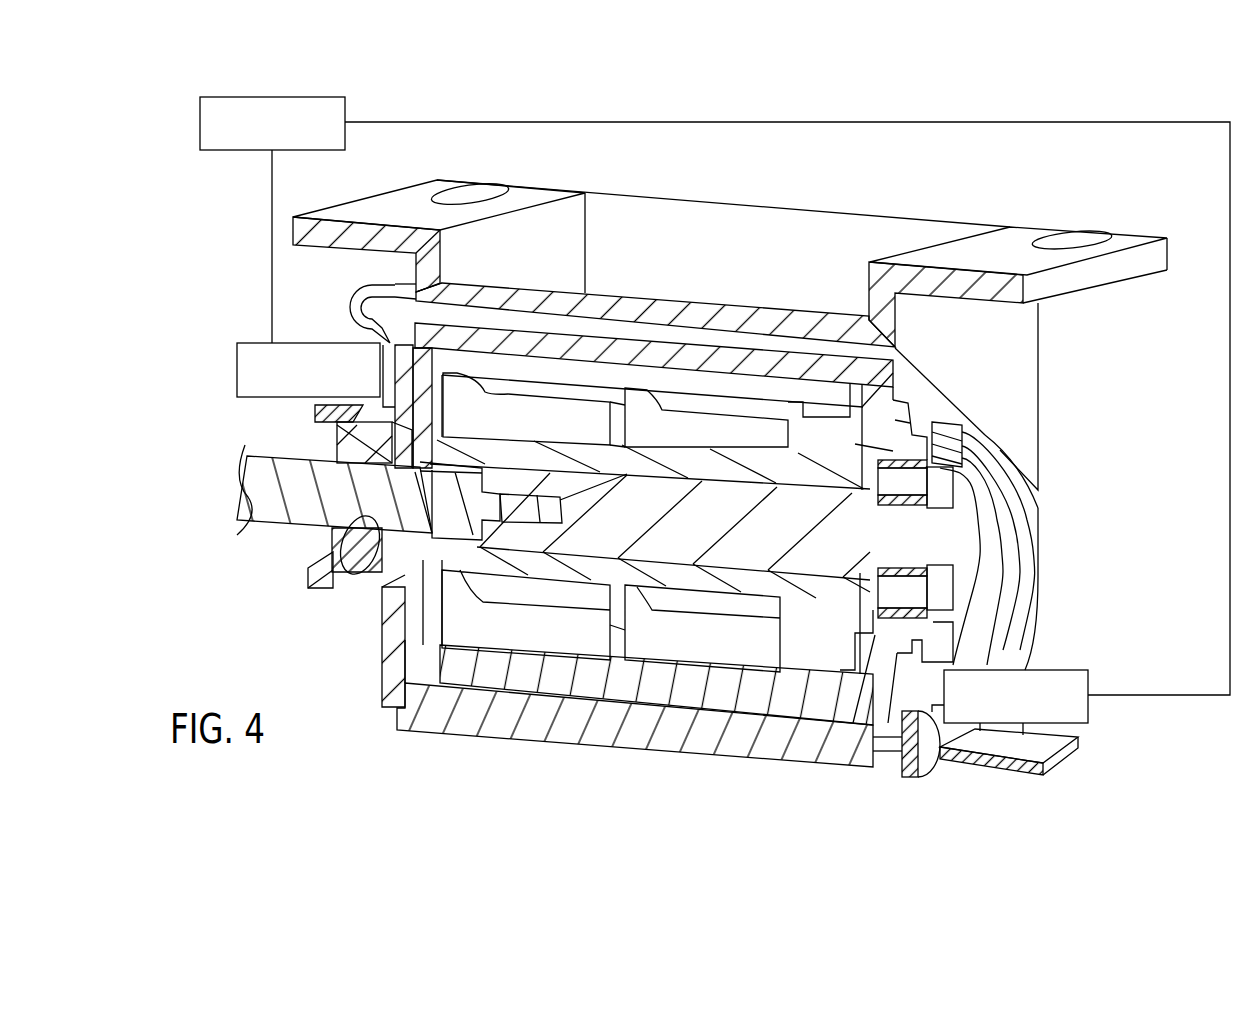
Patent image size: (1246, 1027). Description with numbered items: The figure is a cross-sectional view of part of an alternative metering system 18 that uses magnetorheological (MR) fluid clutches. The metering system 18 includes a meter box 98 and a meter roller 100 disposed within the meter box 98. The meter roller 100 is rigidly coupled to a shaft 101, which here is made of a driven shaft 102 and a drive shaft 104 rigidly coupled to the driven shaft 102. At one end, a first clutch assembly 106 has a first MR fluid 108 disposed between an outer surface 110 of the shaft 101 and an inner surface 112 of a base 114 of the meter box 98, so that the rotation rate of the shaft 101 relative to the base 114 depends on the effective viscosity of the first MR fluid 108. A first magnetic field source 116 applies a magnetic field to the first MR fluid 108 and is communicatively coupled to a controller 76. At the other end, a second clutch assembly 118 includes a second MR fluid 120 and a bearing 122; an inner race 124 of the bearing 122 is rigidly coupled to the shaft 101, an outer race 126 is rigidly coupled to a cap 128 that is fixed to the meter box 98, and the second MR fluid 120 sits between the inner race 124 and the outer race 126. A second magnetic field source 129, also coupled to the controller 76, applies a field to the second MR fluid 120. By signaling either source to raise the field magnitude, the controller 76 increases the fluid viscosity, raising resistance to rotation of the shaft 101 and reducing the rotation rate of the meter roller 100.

The metering system 18 is at (851, 181).
The controller 76 is at (200, 124).
The meter box 98 is at (528, 198).
The meter roller 100 is at (568, 417).
The shaft 101 is at (287, 438).
The driven shaft 102 is at (670, 517).
The drive shaft 104 is at (265, 507).
The first clutch assembly 106 is at (297, 605).
The first MR fluid 108 is at (404, 532).
The outer surface 110 is at (345, 527).
The inner surface 112 is at (362, 548).
The base 114 is at (337, 413).
The first magnetic field source 116 is at (307, 343).
The second clutch assembly 118 is at (1037, 603).
The second MR fluid 120 is at (917, 490).
The bearing 122 is at (950, 620).
The inner race 124 is at (947, 560).
The outer race 126 is at (905, 460).
The cap 128 is at (990, 457).
The second magnetic field source 129 is at (1084, 725).